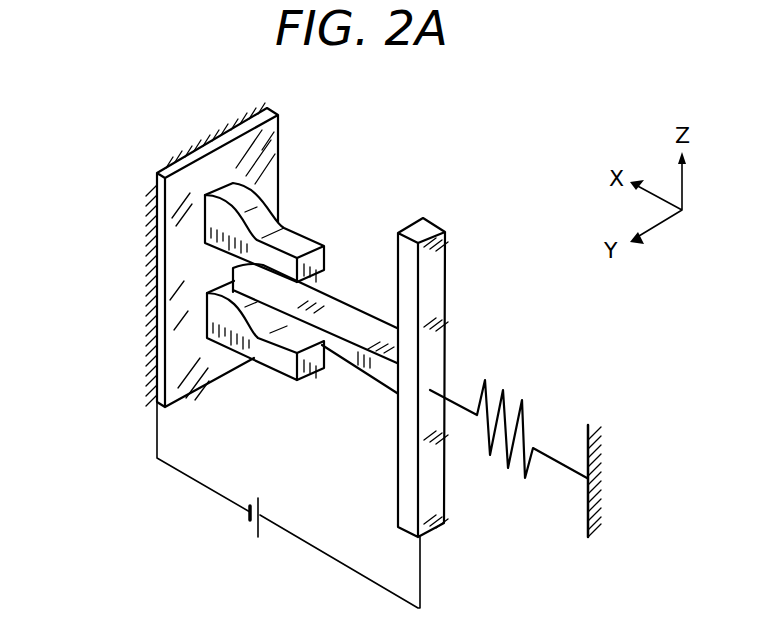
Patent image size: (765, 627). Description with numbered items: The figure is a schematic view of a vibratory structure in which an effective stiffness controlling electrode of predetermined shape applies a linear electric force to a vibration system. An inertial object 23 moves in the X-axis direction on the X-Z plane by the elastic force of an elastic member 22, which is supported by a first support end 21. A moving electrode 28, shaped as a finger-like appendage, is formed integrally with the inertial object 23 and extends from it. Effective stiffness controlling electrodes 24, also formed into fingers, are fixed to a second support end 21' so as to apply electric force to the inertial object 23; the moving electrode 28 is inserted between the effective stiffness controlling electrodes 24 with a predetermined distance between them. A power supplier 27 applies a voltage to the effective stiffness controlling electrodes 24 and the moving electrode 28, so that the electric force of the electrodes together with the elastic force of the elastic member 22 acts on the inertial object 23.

The second support end 21' is at (165, 255).
The effective stiffness controlling electrodes 24 is at (302, 242).
The moving electrode 28 is at (357, 325).
The inertial object 23 is at (448, 297).
The elastic member 22 is at (527, 435).
The first support end 21 is at (626, 453).
The power supplier 27 is at (262, 508).